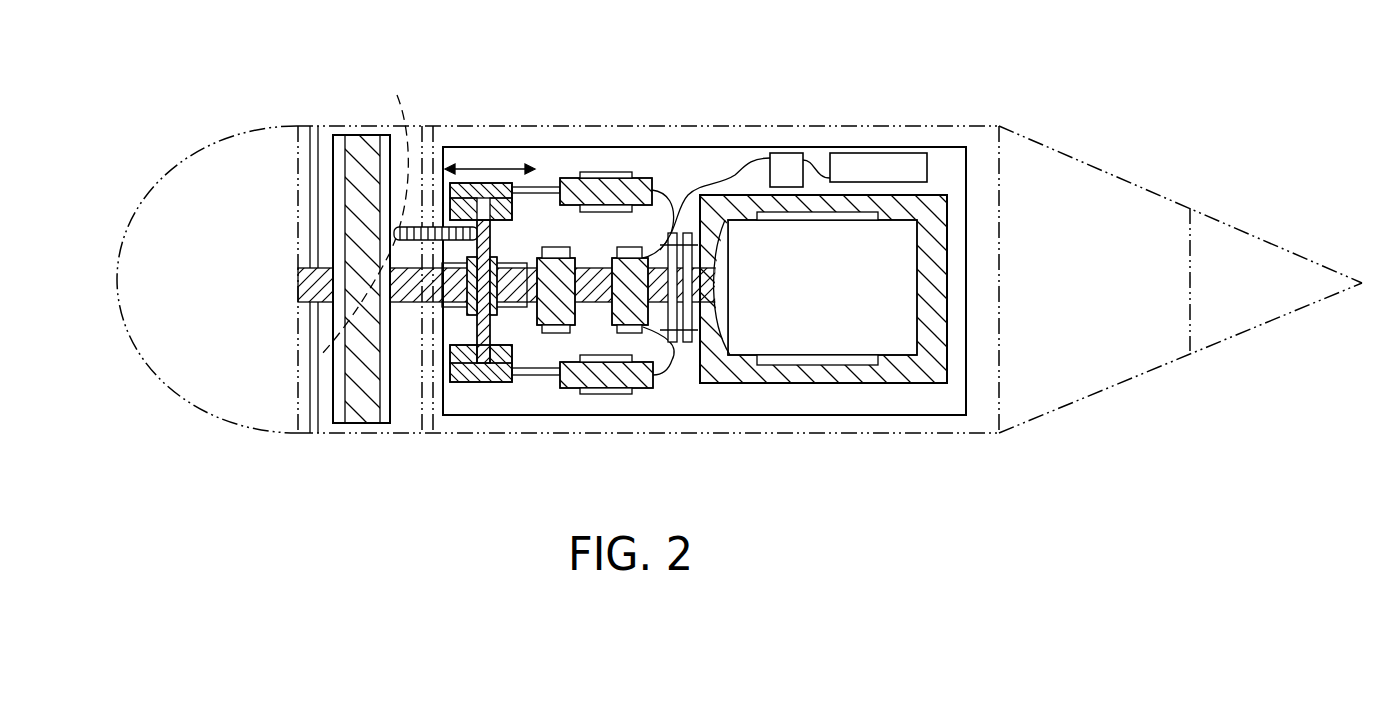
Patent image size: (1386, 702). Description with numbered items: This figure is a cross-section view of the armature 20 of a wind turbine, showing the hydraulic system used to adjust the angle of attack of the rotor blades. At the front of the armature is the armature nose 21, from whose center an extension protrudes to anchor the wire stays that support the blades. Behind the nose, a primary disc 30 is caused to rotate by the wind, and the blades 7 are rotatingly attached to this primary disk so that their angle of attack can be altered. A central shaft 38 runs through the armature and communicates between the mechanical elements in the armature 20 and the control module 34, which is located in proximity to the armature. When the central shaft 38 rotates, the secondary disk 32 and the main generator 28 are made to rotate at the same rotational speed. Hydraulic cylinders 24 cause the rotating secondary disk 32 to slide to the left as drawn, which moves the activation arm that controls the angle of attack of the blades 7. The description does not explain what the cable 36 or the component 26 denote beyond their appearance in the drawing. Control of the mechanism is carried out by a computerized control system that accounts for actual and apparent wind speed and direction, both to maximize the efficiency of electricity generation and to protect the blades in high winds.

The armature 20 is at (213, 144).
The armature nose 21 is at (236, 292).
The blades 7 is at (409, 113).
The primary disc 30 is at (358, 152).
The cable 36 is at (428, 227).
The secondary disk 32 is at (490, 240).
The hydraulic cylinders 24 is at (607, 172).
The sensor 26 is at (785, 153).
The control module 34 is at (868, 126).
The central shaft 38 is at (712, 288).
The main generator 28 is at (861, 332).